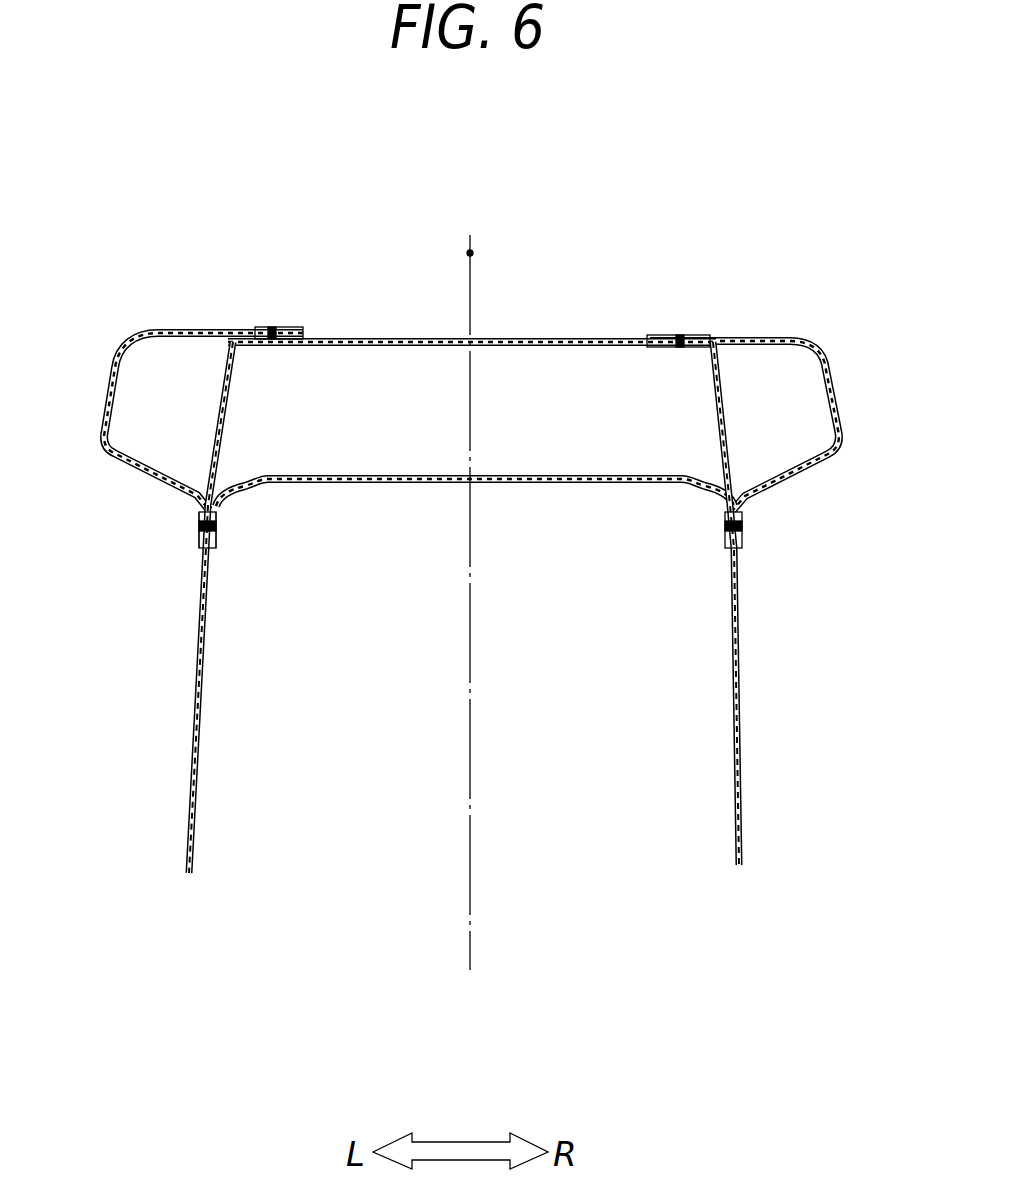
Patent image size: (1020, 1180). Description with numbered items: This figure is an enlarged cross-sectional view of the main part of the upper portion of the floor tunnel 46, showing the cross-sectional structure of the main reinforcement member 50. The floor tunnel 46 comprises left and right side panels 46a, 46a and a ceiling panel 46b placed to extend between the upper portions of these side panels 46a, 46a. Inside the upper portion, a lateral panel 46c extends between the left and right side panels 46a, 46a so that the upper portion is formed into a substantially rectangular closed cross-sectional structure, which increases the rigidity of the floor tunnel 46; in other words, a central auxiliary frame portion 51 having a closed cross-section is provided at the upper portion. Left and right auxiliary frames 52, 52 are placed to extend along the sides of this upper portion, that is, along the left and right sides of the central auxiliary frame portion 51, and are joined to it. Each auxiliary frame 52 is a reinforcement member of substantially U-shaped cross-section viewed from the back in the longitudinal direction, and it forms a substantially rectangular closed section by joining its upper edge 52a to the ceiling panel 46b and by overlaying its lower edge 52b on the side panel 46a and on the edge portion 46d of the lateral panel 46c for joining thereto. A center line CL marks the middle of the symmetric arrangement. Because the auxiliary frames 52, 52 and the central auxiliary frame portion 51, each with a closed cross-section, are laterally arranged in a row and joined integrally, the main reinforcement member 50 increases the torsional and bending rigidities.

The floor tunnel 46 is at (748, 702).
The side panels 46a is at (196, 673).
The ceiling panel 46b is at (352, 336).
The lateral panel 46c is at (372, 486).
The edge portions 46d is at (223, 513).
The main reinforcement member 50 is at (313, 250).
The central auxiliary frame portion 51 is at (548, 446).
The auxiliary frames 52 is at (172, 327).
The upper edges 52a is at (288, 328).
The lower edges 52b is at (197, 506).
The center line CL is at (474, 254).